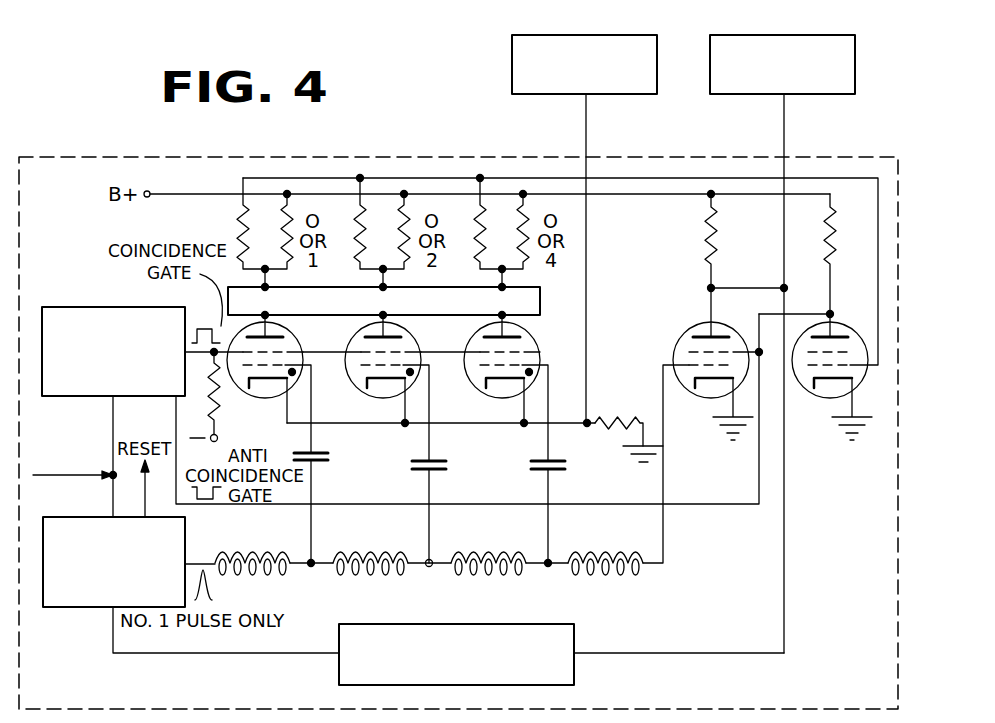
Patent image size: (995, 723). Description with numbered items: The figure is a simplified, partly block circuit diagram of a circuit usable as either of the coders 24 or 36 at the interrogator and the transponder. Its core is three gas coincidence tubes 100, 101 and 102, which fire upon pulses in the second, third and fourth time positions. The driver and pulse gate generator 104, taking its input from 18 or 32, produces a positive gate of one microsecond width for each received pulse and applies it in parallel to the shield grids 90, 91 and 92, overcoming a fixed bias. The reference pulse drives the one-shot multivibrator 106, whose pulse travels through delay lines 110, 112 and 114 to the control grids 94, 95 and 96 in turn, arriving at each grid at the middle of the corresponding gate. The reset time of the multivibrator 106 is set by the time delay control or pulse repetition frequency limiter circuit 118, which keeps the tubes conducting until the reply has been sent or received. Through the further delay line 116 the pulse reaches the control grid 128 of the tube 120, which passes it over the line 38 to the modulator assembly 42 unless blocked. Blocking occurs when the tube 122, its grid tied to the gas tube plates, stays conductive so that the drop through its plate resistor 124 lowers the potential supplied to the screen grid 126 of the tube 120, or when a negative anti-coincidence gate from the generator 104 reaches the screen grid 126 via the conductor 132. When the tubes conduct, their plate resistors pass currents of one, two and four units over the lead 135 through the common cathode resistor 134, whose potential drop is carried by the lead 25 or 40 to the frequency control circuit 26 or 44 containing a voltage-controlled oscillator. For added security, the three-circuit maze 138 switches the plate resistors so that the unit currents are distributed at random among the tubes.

The coder 24 is at (458, 420).
The coder 36 is at (147, 157).
The frequency control circuit 26 is at (583, 52).
The frequency control circuit 44 is at (617, 35).
The modulator assembly 42 is at (748, 35).
The frequency control lead 25 is at (606, 258).
The frequency control lead 40 is at (587, 134).
The line 38 is at (784, 146).
The input 18 is at (75, 443).
The input 32 is at (75, 443).
The driver and pulse gate generator 104 is at (83, 307).
The one-shot multivibrator 106 is at (81, 517).
The 3 circuit maze 138 is at (406, 303).
The shield grid 90 is at (282, 352).
The shield grid 91 is at (400, 352).
The shield grid 92 is at (519, 352).
The control grid 94 is at (292, 368).
The control grid 95 is at (410, 368).
The control grid 96 is at (529, 368).
The gas coincidence tube 100 is at (237, 396).
The gas coincidence tube 101 is at (355, 396).
The gas coincidence tube 102 is at (474, 396).
The delay line 110 is at (240, 577).
The delay line 112 is at (360, 577).
The delay line 114 is at (483, 577).
The delay line 116 is at (600, 577).
The time delay control or pulse repetition frequency limiter circuit 118 is at (382, 624).
The tube 120 is at (692, 370).
The tube 122 is at (831, 399).
The plate resistor 124 is at (836, 230).
The screen grid 126 is at (691, 350).
The control grid 128 is at (682, 365).
The conductor 132 is at (515, 503).
The common cathode resistor 134 is at (636, 414).
The lead 135 is at (565, 432).